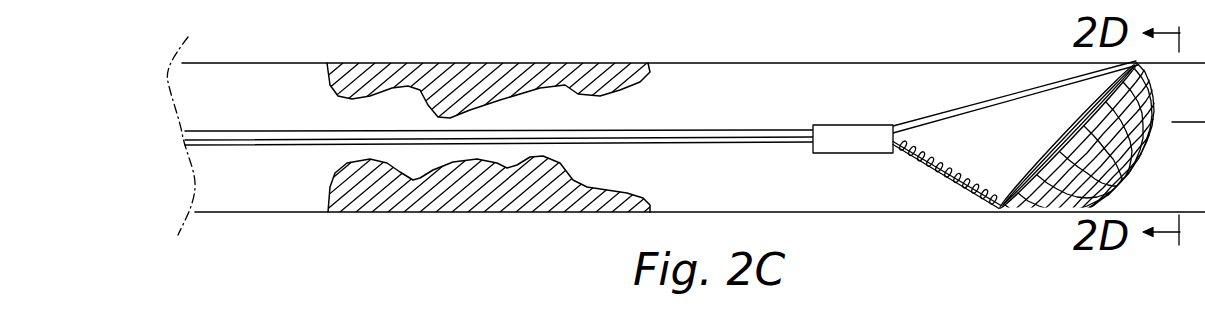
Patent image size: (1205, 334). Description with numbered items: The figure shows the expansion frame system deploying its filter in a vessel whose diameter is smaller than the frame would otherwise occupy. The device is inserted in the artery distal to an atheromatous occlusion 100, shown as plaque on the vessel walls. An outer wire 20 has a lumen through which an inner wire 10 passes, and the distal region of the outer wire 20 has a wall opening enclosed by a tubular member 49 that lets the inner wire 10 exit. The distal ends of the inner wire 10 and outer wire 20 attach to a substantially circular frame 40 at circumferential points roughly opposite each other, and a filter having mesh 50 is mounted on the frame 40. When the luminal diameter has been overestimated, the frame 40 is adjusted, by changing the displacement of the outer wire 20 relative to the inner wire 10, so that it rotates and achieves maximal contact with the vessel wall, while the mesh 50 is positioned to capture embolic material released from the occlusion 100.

The inner wire 10 is at (293, 143).
The outer wire 20 is at (233, 131).
The substantially circular frame 40 is at (1072, 115).
The tubular member 49 is at (841, 125).
The mesh 50 is at (1035, 208).
The atheromatous occlusion 100 is at (432, 63).